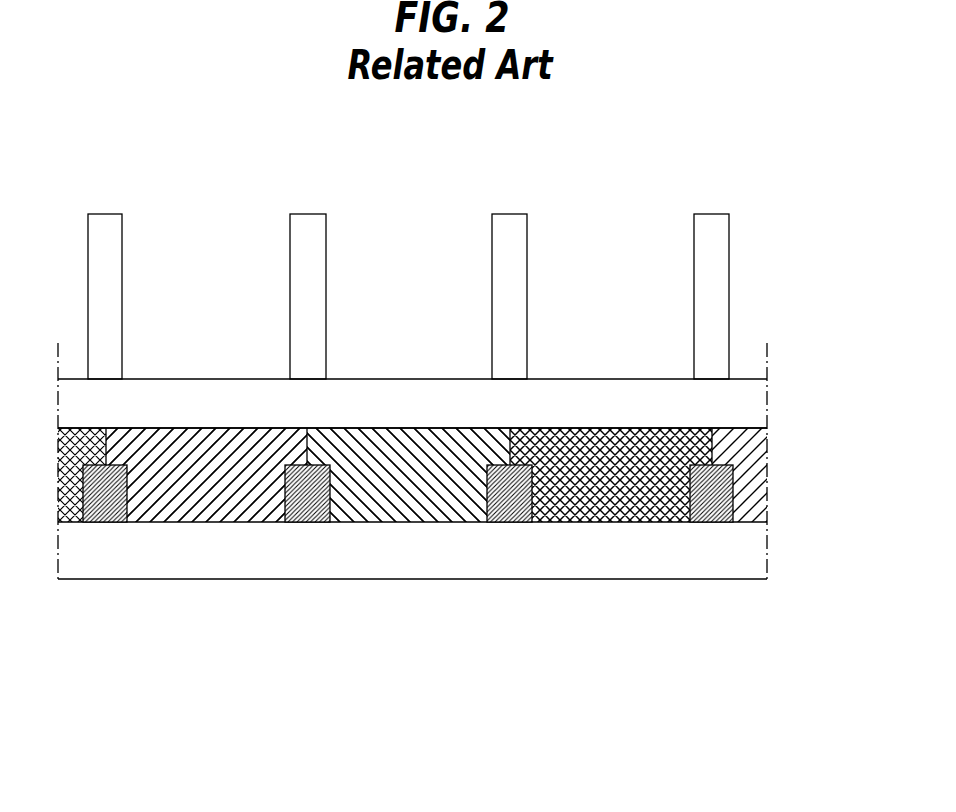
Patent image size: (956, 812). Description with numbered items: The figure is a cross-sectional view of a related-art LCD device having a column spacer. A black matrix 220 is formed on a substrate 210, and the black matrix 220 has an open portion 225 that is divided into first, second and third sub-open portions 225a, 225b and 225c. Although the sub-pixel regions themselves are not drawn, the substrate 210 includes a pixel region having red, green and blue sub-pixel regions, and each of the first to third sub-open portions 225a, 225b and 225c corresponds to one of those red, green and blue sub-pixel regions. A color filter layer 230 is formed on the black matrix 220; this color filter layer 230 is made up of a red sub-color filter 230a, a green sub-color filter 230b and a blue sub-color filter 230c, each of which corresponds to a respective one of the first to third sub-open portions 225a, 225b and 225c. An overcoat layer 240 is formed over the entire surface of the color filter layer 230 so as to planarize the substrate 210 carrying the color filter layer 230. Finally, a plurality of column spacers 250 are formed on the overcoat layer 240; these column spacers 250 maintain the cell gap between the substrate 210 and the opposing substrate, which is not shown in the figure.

The substrate 210 is at (470, 565).
The black matrix 220 is at (737, 503).
The open portion 225 is at (409, 559).
The first sub-open portion 225a is at (203, 517).
The second sub-open portion 225b is at (399, 517).
The third sub-open portion 225c is at (618, 517).
The color filter layer 230 is at (412, 399).
The red sub-color filter 230a is at (203, 438).
The green sub-color filter 230b is at (406, 438).
The blue sub-color filter 230c is at (610, 437).
The overcoat layer 240 is at (753, 403).
The column spacers 250 is at (510, 218).